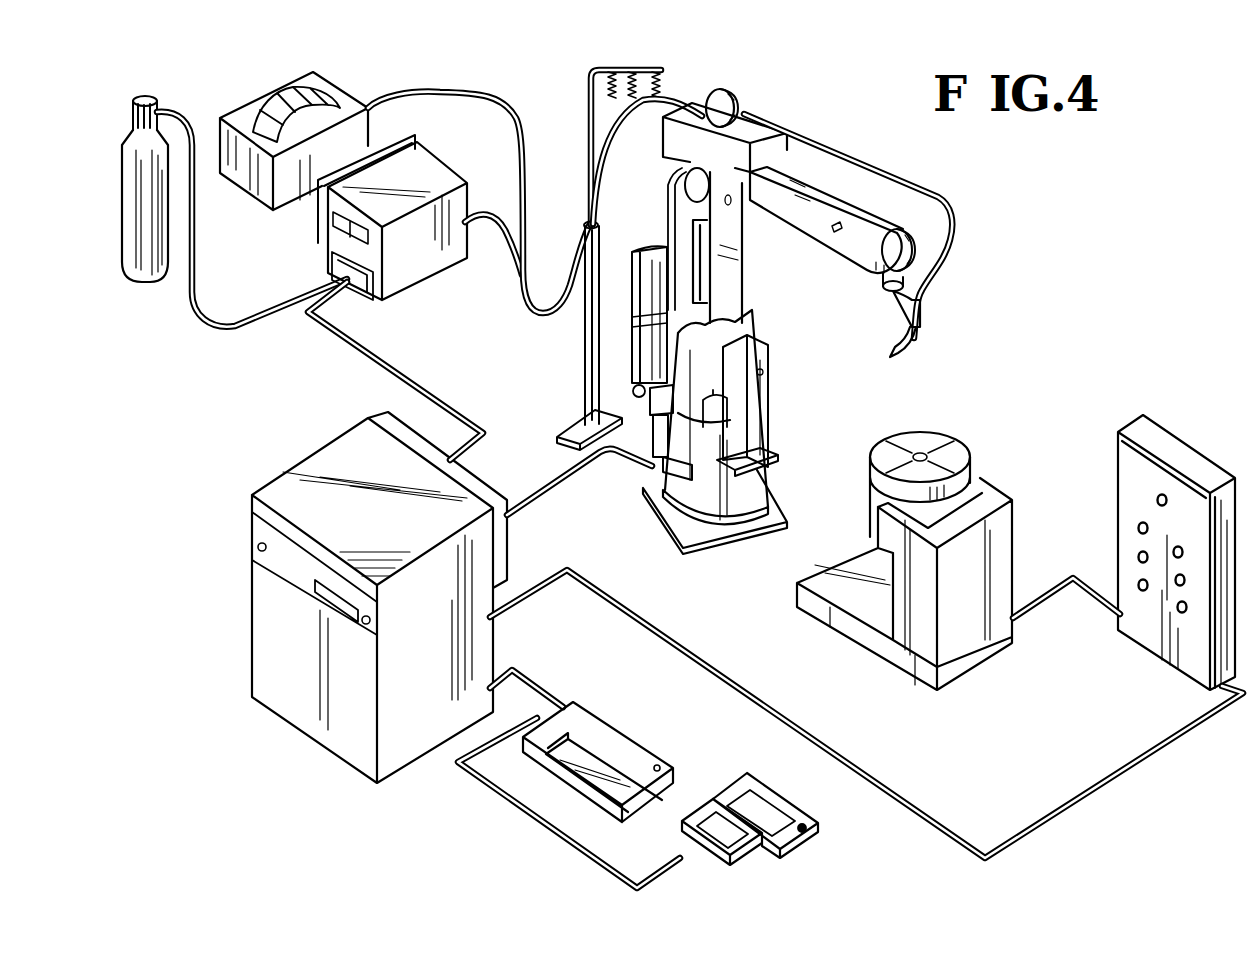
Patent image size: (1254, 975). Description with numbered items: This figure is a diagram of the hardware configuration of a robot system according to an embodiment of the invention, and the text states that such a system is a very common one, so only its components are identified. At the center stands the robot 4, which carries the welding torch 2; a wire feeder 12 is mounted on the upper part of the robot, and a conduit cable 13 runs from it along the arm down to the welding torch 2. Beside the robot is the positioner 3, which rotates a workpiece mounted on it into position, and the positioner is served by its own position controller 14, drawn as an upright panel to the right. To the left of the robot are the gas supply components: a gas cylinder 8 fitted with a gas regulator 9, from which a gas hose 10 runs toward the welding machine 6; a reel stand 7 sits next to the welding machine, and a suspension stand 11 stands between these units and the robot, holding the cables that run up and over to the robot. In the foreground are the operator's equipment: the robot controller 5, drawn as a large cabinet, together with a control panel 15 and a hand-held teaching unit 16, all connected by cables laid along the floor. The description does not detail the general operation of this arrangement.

The welding torch 2 is at (920, 340).
The positioner 3 is at (970, 445).
The robot 4 is at (771, 420).
The robot controller 5 is at (311, 456).
The welding machine 6 is at (328, 259).
The reel stand 7 is at (233, 186).
The gas cylinder 8 is at (143, 277).
The gas regulator 9 is at (146, 97).
The gas hose 10 is at (211, 331).
The suspension stand 11 is at (587, 92).
The wire feeder 12 is at (746, 97).
The conduit cable 13 is at (954, 228).
The position controller 14 is at (1134, 418).
The control panel 15 is at (578, 705).
The teaching unit 16 is at (824, 833).